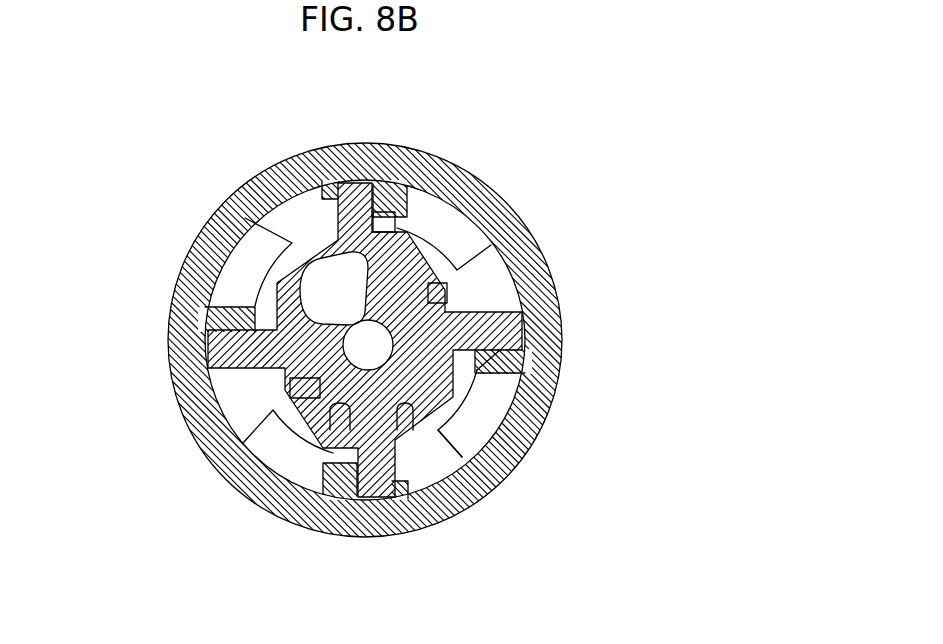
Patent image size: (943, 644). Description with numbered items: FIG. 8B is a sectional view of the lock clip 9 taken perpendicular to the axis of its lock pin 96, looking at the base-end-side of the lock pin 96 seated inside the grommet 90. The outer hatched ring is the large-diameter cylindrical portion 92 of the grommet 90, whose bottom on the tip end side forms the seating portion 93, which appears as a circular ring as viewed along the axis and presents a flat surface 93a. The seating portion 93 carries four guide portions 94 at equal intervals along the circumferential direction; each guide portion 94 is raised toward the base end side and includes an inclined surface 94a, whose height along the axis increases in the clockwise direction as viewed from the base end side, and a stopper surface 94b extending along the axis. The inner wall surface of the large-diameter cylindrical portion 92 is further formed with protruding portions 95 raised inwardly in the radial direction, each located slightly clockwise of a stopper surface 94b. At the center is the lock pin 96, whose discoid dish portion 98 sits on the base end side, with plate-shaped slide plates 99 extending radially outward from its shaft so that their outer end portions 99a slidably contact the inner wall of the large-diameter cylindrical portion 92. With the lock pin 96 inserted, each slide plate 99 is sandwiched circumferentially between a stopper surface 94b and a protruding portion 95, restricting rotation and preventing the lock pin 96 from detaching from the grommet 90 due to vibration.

The lock clip 9 is at (725, 101).
The grommet 90 is at (541, 229).
The large-diameter cylindrical portion 92 is at (548, 278).
The seating portion 93 is at (427, 464).
The flat surface 93a is at (470, 478).
The guide portion 94 is at (238, 266).
The inclined surface 94a is at (510, 386).
The stopper surface 94b is at (500, 326).
The protruding portion 95 is at (330, 180).
The lock pin 96 is at (417, 282).
The dish portion 98 is at (335, 383).
The slide plate 99 is at (363, 181).
The outer end portion 99a is at (235, 357).